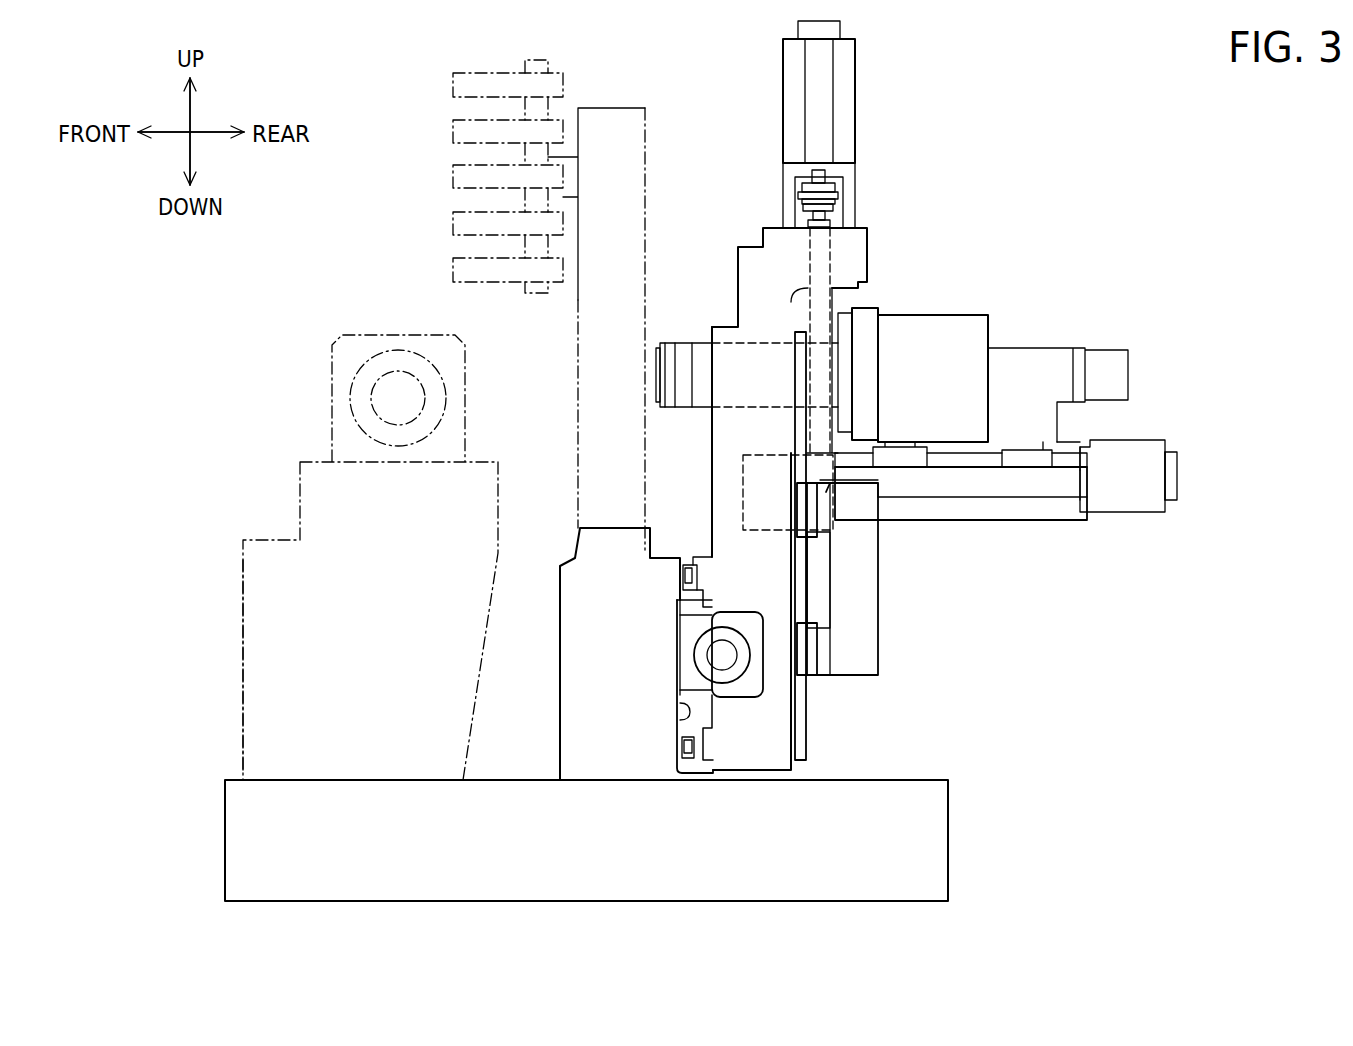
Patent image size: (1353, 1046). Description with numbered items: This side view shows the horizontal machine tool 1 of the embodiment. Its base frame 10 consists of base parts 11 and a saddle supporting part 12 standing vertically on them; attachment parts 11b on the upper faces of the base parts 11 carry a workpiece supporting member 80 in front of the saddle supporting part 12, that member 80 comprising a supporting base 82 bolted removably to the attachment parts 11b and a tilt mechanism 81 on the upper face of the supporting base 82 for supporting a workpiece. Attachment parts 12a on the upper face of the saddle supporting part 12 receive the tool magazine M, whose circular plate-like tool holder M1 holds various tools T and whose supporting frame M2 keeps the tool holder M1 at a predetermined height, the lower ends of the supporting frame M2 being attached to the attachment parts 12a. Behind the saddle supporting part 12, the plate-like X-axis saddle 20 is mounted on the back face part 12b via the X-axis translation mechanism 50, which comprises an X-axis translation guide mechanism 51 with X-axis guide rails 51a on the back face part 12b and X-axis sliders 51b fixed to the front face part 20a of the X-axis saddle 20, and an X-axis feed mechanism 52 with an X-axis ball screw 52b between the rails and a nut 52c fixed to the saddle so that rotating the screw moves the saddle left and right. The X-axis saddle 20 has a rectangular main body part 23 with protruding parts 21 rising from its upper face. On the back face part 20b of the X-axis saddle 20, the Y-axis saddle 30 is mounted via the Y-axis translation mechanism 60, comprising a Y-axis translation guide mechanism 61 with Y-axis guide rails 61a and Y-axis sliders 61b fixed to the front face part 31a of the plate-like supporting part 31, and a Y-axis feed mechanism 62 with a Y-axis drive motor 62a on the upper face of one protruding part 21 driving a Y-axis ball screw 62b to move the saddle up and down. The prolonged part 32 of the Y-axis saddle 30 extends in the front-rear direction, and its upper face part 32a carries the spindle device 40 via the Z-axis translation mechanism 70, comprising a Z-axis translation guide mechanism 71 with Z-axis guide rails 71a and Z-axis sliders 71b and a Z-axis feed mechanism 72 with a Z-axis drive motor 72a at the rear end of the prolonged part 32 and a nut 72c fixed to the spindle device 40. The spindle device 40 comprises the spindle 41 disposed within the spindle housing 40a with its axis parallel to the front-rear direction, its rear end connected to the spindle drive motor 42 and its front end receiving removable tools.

The horizontal machine tool 1 is at (1035, 112).
The base frame 10 is at (603, 812).
The base part 11 is at (228, 843).
The attachment part 11b is at (383, 778).
The saddle supporting part 12 is at (591, 645).
The attachment part 12a is at (580, 515).
The back face part 12b is at (683, 724).
The X-axis saddle 20 is at (740, 499).
The front face part 20a is at (712, 458).
The back face part 20b is at (793, 760).
The protruding part 21 is at (760, 283).
The main body part 23 is at (870, 492).
The Y-axis saddle 30 is at (906, 600).
The supporting part 31 is at (875, 579).
The front face part 31a is at (826, 603).
The prolonged part 32 is at (1124, 506).
The upper face part 32a is at (1082, 470).
The spindle device 40 is at (862, 347).
The spindle housing 40a is at (702, 352).
The spindle 41 is at (655, 372).
The spindle drive motor 42 is at (990, 390).
The X-axis translation mechanism 50 is at (642, 649).
The X-axis translation guide mechanism 51 is at (690, 679).
The X-axis guide rail 51a is at (694, 586).
The X-axis slider 51b is at (695, 570).
The X-axis feed mechanism 52 is at (642, 715).
The X-axis ball screw 52b is at (732, 661).
The nut 52c is at (722, 672).
The Y-axis translation mechanism 60 is at (823, 527).
The Y-axis translation guide mechanism 61 is at (879, 545).
The Y-axis guide rail 61a is at (800, 735).
The Y-axis slider 61b is at (807, 506).
The Y-axis feed mechanism 62 is at (869, 315).
The Y-axis drive motor 62a is at (850, 88).
The Y-axis ball screw 62b is at (842, 352).
The Z-axis translation mechanism 70 is at (1069, 469).
The Z-axis translation guide mechanism 71 is at (1015, 451).
The Z-axis guide rail 71a is at (952, 458).
The Z-axis slider 71b is at (902, 457).
The Z-axis feed mechanism 72 is at (1133, 518).
The Z-axis drive motor 72a is at (1160, 490).
The nut 72c is at (963, 457).
The workpiece supporting member 80 is at (340, 517).
The tilt mechanism 81 is at (385, 360).
The supporting base 82 is at (267, 630).
The tool magazine M is at (561, 276).
The tool holder M1 is at (538, 60).
The supporting frame M2 is at (628, 132).
The tool T is at (460, 88).